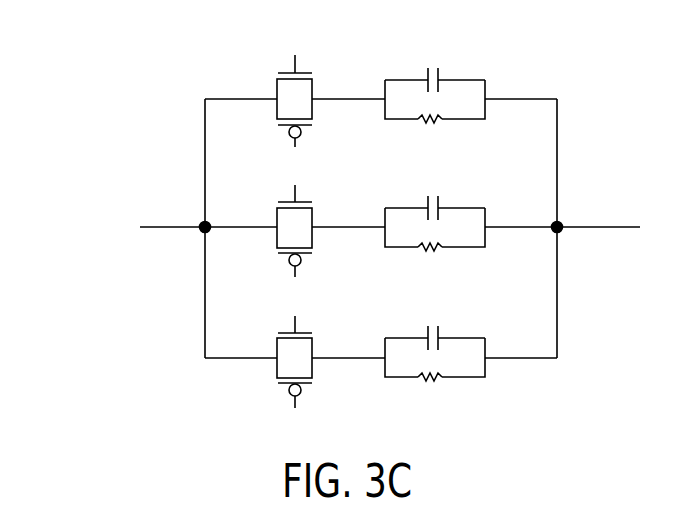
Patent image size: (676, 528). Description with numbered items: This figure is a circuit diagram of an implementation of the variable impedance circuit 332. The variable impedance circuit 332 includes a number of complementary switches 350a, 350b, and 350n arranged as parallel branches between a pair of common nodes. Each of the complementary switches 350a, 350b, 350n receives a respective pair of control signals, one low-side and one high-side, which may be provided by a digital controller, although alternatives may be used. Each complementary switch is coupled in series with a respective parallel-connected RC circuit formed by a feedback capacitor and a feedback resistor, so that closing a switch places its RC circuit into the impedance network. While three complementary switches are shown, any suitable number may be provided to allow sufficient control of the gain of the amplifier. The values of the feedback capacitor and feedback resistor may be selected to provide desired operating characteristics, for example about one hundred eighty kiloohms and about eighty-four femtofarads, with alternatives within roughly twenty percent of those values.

The variable impedance circuit 332 is at (95, 97).
The complementary switch 350a is at (328, 70).
The complementary switch 350b is at (328, 197).
The complementary switch 350n is at (328, 328).